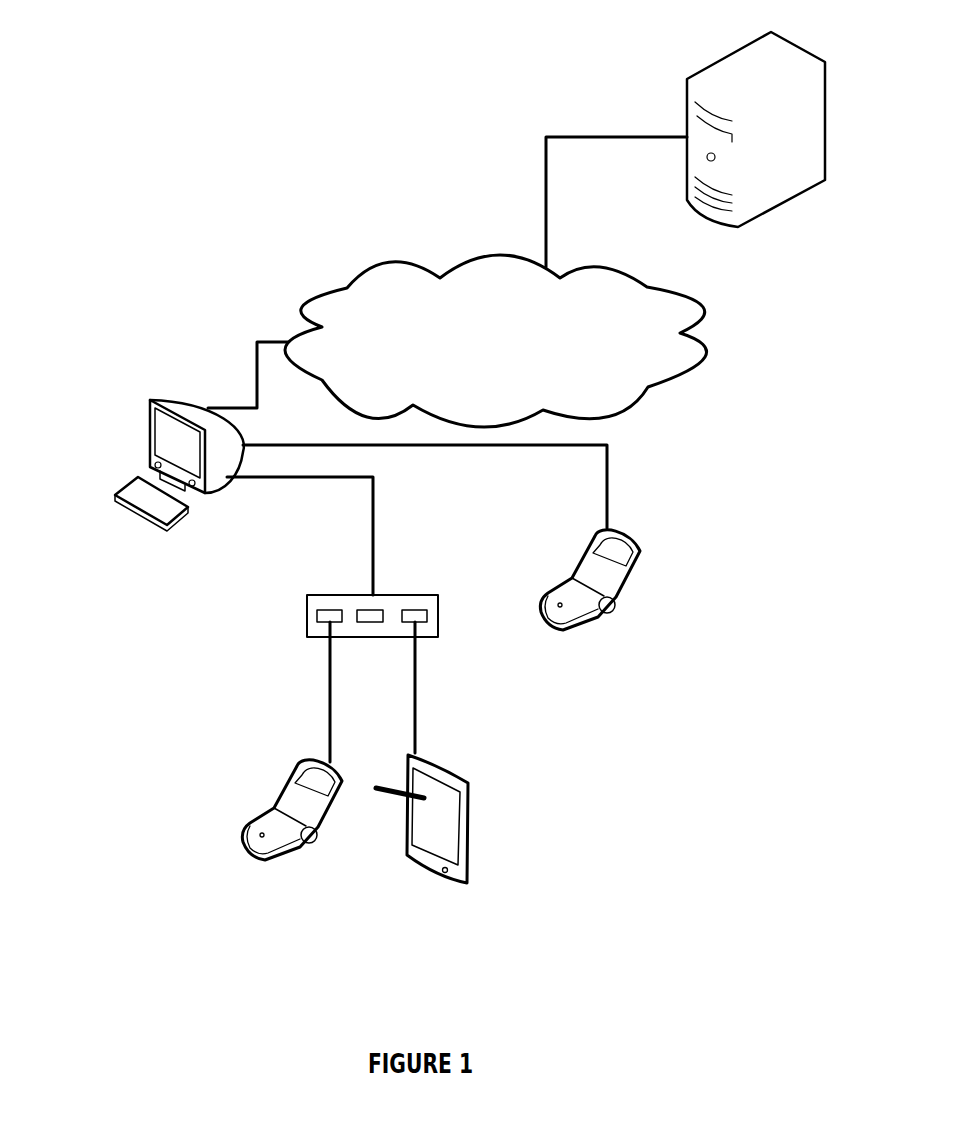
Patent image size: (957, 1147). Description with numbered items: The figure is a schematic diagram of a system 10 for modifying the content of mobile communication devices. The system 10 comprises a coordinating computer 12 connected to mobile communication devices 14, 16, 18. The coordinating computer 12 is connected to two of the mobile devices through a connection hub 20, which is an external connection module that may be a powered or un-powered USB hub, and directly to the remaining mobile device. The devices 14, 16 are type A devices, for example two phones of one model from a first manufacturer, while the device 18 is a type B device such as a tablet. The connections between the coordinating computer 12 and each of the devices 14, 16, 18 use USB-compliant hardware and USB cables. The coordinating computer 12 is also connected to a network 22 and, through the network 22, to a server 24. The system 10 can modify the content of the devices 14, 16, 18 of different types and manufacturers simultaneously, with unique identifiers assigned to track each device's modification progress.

The system 10 is at (209, 149).
The coordinating computer 12 is at (150, 400).
The mobile communication device 14 is at (255, 822).
The mobile communication device 16 is at (642, 545).
The mobile communication device 18 is at (467, 782).
The connection hub 20 is at (412, 595).
The network 22 is at (496, 254).
The server 24 is at (687, 79).